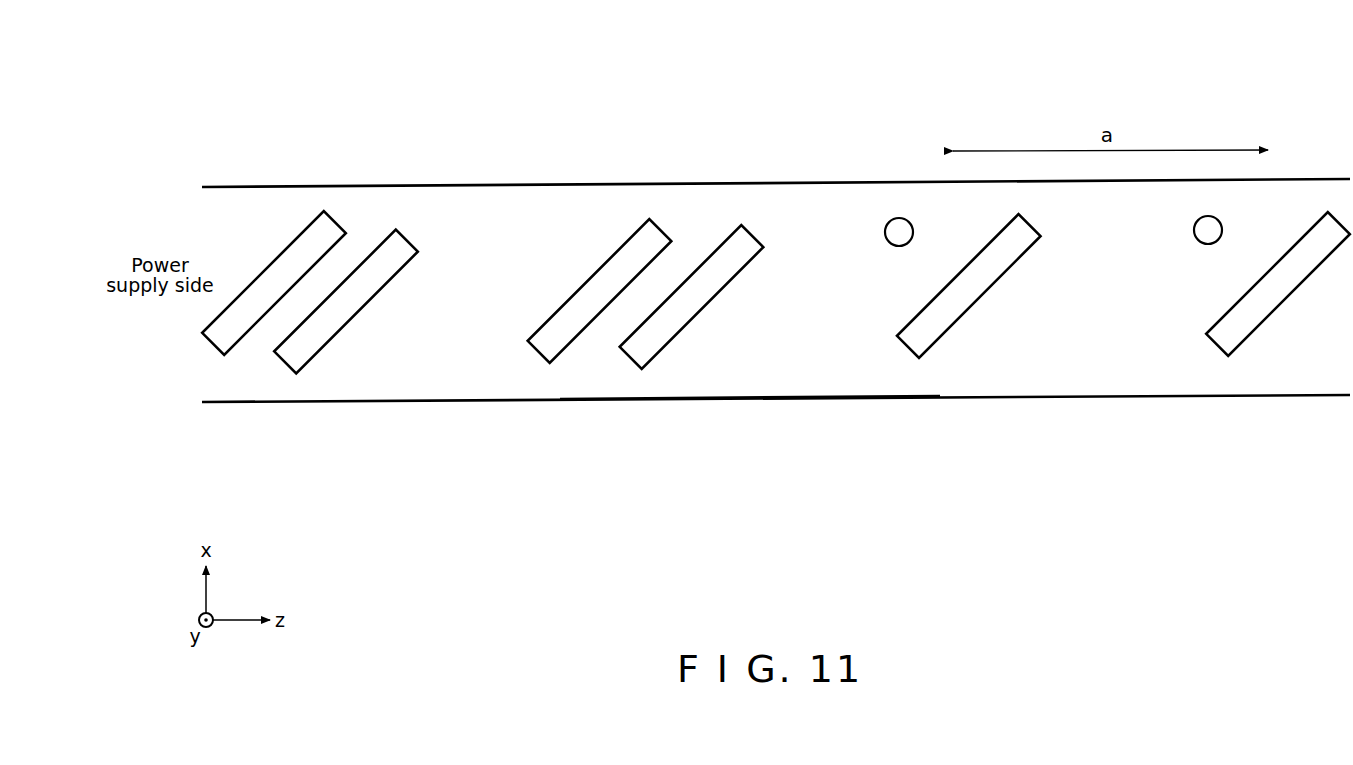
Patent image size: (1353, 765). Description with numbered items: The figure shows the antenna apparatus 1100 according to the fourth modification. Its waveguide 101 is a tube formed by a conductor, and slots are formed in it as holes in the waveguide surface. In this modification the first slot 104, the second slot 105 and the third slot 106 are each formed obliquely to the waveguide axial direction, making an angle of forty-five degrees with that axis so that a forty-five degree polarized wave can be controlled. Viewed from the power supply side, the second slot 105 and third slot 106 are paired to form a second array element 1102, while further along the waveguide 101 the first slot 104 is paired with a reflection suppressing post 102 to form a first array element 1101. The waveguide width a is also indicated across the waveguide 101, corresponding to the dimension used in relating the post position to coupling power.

The antenna apparatus 1100 is at (898, 108).
The waveguide 101 is at (747, 400).
The second array element 1102 is at (310, 344).
The third slot 106 is at (248, 334).
The second slot 105 is at (346, 334).
The first array element 1101 is at (1263, 342).
The reflection suppressing post 102 is at (1198, 244).
The first slot 104 is at (1253, 334).